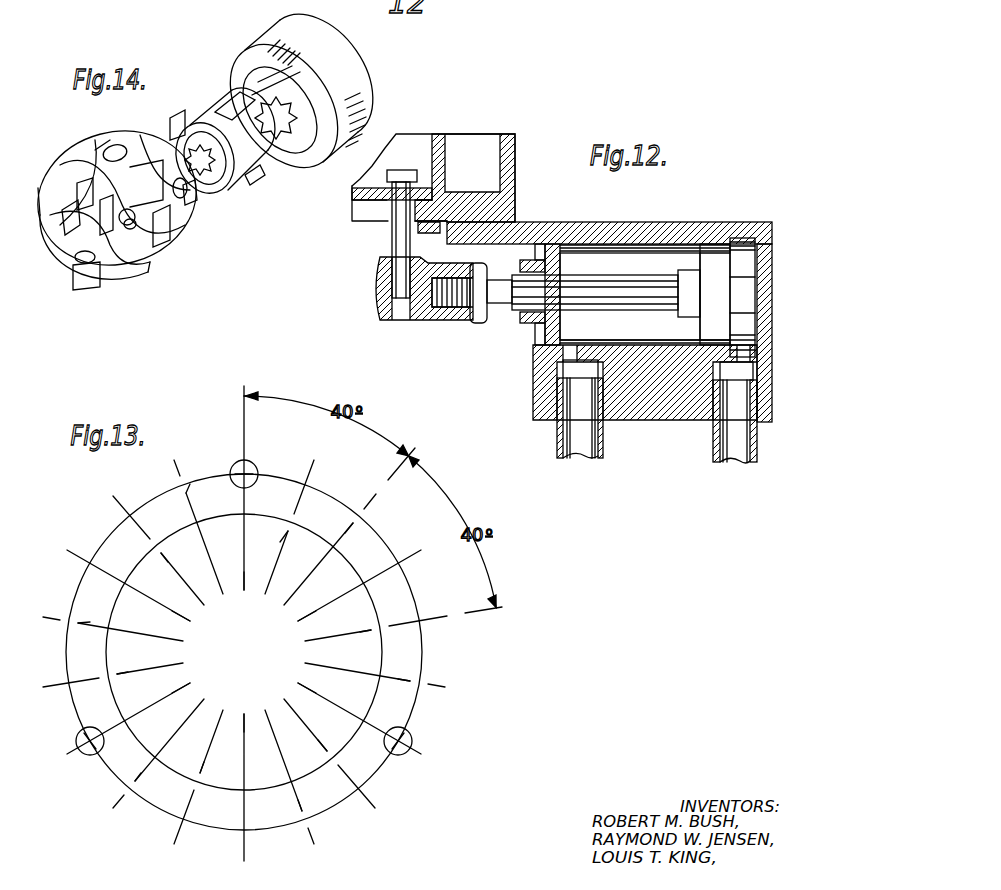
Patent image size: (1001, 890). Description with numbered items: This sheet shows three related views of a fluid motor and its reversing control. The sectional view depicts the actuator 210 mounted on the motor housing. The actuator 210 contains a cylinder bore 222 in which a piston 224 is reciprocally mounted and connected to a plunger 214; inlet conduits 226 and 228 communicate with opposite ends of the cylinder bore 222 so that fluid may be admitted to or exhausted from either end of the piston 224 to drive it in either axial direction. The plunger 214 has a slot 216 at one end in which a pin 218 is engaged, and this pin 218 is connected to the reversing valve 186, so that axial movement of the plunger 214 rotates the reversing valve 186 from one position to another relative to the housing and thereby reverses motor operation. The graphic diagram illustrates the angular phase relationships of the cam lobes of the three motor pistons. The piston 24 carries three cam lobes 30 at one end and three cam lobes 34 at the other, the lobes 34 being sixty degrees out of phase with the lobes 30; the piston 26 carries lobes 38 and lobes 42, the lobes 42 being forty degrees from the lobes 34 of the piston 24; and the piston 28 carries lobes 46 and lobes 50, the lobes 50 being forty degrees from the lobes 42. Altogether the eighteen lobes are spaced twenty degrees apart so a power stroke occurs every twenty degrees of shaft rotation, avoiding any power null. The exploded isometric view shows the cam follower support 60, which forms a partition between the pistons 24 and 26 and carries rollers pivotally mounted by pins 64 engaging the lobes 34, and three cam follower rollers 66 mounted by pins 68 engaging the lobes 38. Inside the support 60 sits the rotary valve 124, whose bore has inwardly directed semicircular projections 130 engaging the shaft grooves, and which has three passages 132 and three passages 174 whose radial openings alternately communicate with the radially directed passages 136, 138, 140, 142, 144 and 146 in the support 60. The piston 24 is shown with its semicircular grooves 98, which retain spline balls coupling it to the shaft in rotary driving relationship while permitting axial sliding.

In FIG. 14, the piston 24 is at (350, 67).
In FIG. 13, the piston 24 is at (244, 631).
In FIG. 13, the piston 26 is at (244, 651).
In FIG. 13, the piston 28 is at (261, 651).
In FIG. 14, the cam lobes 30 is at (320, 25).
In FIG. 13, the cam lobes 30 is at (244, 671).
In FIG. 14, the cam lobes 34 is at (247, 65).
In FIG. 13, the cam lobes 34 is at (244, 632).
In FIG. 13, the cam lobes 38 is at (275, 636).
In FIG. 13, the cam lobes 42 is at (214, 667).
In FIG. 13, the cam lobes 46 is at (221, 639).
In FIG. 13, the cam lobes 50 is at (268, 663).
In FIG. 14, the cam follower support 60 is at (135, 285).
In FIG. 14, the pins 64 is at (178, 180).
In FIG. 14, the cam follower rollers 66 is at (55, 175).
In FIG. 14, the pins 68 is at (80, 253).
In FIG. 14, the grooves 98 is at (300, 153).
In FIG. 14, the rotary valve 124 is at (237, 197).
In FIG. 14, the semicircular projections 130 is at (222, 142).
In FIG. 14, the passages 132 is at (222, 97).
In FIG. 14, the radially directed passage 136 is at (100, 143).
In FIG. 14, the radially directed passage 138 is at (70, 223).
In FIG. 14, the radially directed passage 140 is at (80, 243).
In FIG. 14, the radially directed passage 142 is at (157, 263).
In FIG. 14, the radially directed passage 144 is at (168, 253).
In FIG. 14, the radially directed passage 146 is at (140, 133).
In FIG. 14, the passages 174 is at (183, 120).
In FIG. 12, the reversing valve 186 is at (437, 133).
In FIG. 12, the actuator 210 is at (702, 232).
In FIG. 12, the plunger 214 is at (583, 287).
In FIG. 12, the slot 216 is at (400, 318).
In FIG. 12, the pin 218 is at (398, 233).
In FIG. 12, the cylinder bore 222 is at (627, 245).
In FIG. 12, the piston 224 is at (712, 255).
In FIG. 12, the inlet conduit 226 is at (728, 452).
In FIG. 12, the inlet conduit 228 is at (590, 437).